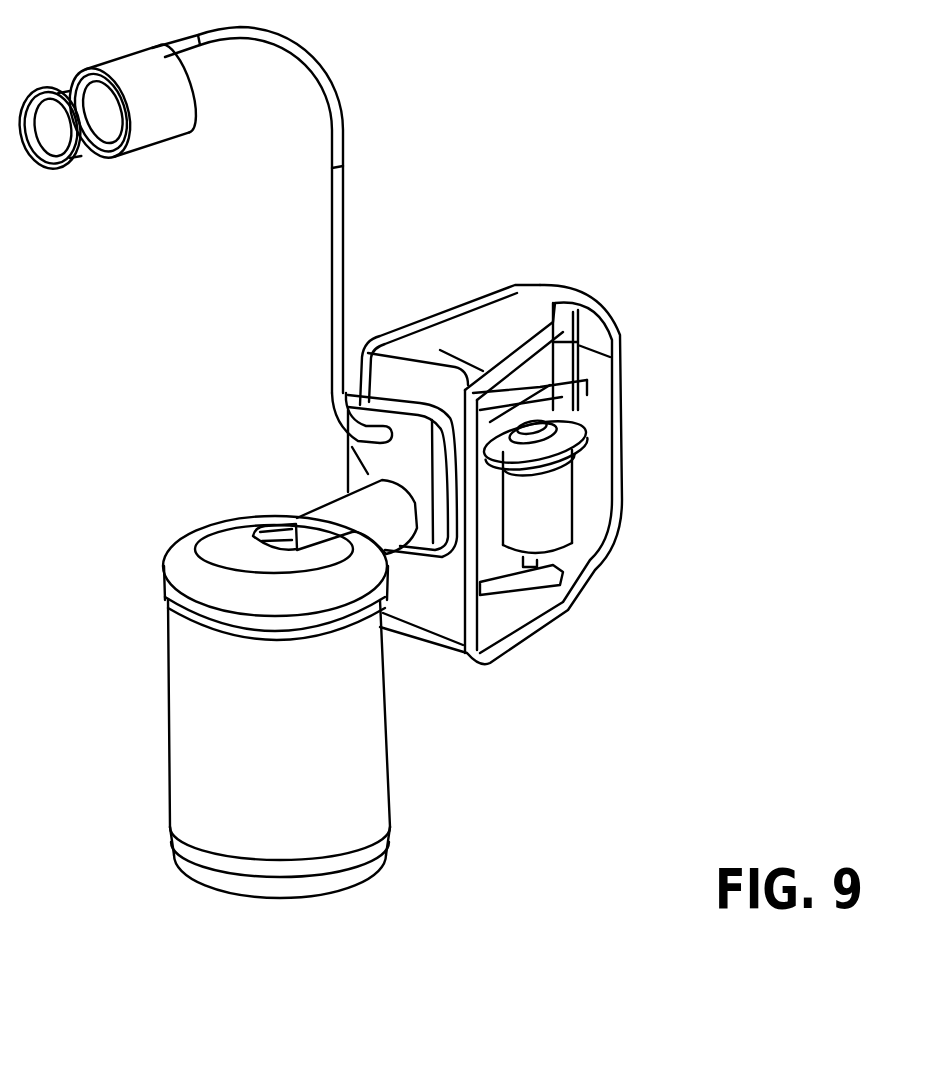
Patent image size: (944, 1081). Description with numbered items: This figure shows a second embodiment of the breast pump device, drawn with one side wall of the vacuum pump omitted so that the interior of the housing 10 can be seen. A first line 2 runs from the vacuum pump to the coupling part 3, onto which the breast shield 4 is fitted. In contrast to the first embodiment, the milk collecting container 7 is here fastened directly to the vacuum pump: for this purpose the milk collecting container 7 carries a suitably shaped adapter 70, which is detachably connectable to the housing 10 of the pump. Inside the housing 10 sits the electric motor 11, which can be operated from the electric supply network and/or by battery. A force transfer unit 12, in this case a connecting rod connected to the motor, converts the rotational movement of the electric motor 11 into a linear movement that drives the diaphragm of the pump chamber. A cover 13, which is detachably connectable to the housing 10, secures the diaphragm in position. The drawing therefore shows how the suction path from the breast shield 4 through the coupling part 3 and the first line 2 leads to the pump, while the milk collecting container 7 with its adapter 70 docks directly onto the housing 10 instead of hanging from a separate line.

The first line 2 is at (343, 135).
The coupling part 3 is at (147, 133).
The breast shield 4 is at (63, 172).
The milk collecting container 7 is at (192, 722).
The housing 10 is at (535, 307).
The electric motor 11 is at (560, 483).
The force transfer unit 12 is at (583, 382).
The cover 13 is at (345, 447).
The adapter 70 is at (317, 520).